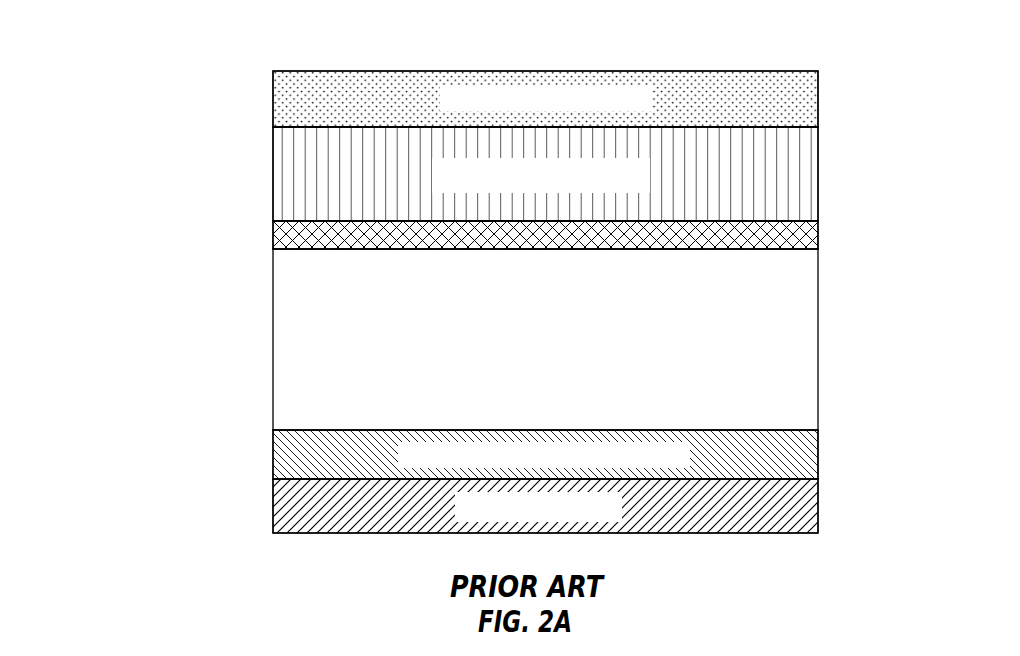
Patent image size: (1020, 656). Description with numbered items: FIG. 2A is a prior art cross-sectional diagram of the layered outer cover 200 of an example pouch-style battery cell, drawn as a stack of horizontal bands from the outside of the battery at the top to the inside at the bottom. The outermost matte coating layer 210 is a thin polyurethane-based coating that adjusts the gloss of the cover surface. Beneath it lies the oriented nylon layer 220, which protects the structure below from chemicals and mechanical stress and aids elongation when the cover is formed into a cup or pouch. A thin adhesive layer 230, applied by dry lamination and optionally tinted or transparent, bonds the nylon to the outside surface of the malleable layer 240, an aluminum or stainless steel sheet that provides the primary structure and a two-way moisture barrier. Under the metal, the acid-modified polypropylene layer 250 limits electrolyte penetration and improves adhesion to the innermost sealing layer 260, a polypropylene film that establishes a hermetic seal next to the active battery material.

The outer cover 200 is at (460, 272).
The matte coating layer 210 is at (545, 99).
The oriented nylon layer 220 is at (545, 174).
The adhesive layer 230 is at (273, 243).
The malleable layer 240 is at (545, 339).
The acid-modified polypropylene layer 250 is at (545, 454).
The sealing layer 260 is at (545, 506).